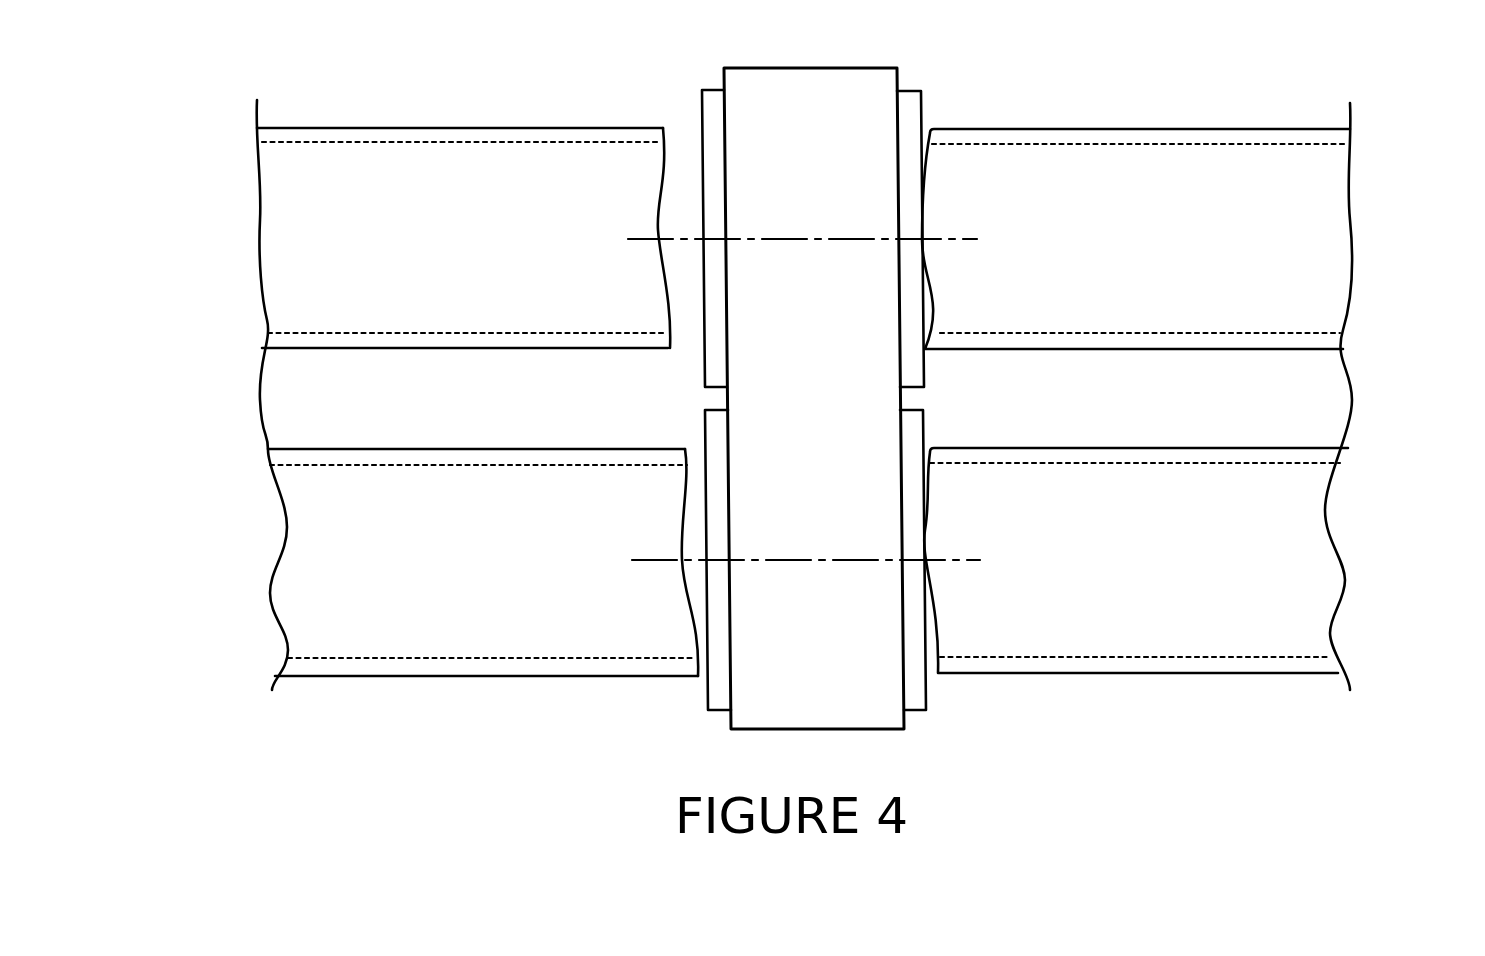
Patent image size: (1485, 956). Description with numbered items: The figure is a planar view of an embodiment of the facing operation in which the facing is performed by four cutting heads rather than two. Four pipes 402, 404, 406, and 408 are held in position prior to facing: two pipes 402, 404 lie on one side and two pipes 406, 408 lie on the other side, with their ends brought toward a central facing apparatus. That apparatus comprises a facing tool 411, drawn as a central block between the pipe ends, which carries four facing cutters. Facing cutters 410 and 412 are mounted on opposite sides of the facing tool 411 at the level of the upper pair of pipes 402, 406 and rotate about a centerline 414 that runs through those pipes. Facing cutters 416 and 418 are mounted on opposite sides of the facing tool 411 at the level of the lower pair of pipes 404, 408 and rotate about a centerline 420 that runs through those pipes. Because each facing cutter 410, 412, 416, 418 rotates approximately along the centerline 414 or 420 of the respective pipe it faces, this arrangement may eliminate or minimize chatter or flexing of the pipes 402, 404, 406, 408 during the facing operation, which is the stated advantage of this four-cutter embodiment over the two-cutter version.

The pipe 402 is at (297, 253).
The pipe 404 is at (310, 595).
The pipe 406 is at (1292, 243).
The pipe 408 is at (1312, 590).
The facing cutter 410 is at (921, 110).
The facing tool 411 is at (878, 715).
The facing cutter 412 is at (702, 107).
The centerline 414 is at (950, 238).
The facing cutter 416 is at (705, 704).
The facing cutter 418 is at (924, 693).
The centerline 420 is at (955, 560).